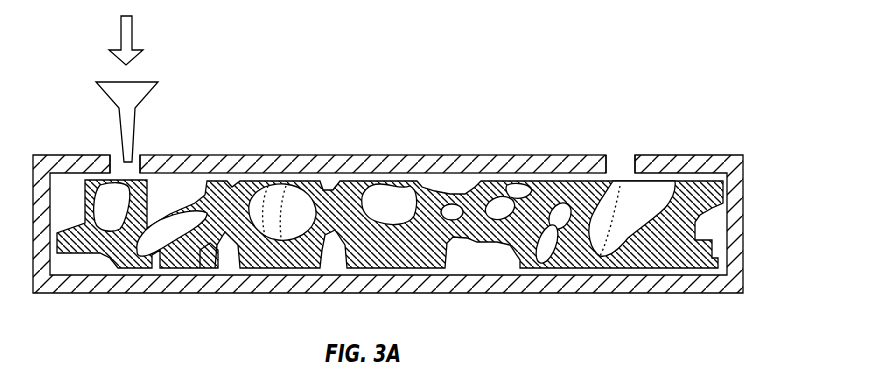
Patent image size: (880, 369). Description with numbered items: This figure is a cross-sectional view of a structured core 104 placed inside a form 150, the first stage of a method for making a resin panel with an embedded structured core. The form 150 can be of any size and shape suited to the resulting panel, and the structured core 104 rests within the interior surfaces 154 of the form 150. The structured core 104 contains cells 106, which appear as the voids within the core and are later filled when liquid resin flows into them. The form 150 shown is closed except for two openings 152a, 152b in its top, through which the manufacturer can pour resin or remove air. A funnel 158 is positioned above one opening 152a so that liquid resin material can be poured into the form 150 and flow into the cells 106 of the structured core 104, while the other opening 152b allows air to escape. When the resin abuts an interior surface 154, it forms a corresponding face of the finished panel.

The structured core 104 is at (697, 198).
The cells 106 is at (168, 230).
The form 150 is at (632, 294).
The opening 152a is at (138, 151).
The opening 152b is at (622, 153).
The interior surfaces 154 is at (459, 174).
The funnel 158 is at (140, 90).